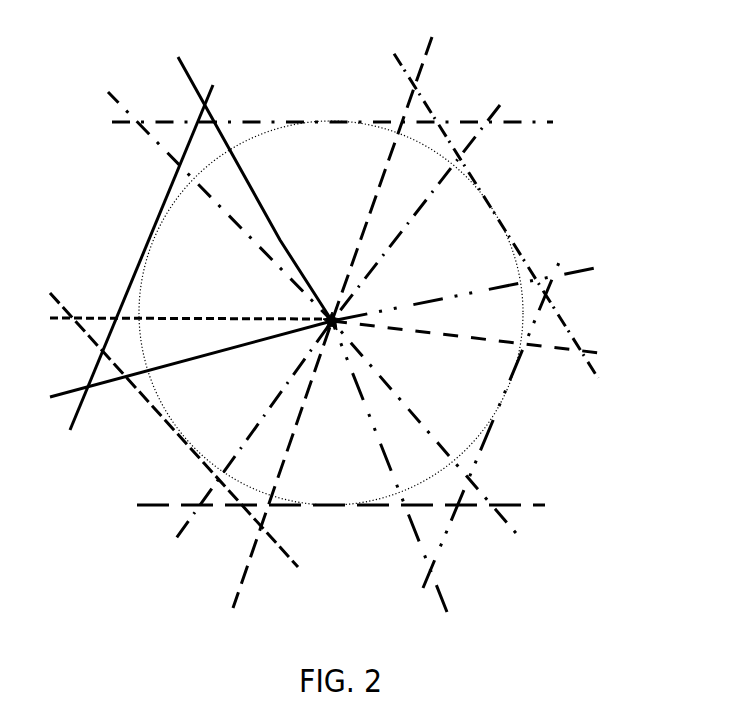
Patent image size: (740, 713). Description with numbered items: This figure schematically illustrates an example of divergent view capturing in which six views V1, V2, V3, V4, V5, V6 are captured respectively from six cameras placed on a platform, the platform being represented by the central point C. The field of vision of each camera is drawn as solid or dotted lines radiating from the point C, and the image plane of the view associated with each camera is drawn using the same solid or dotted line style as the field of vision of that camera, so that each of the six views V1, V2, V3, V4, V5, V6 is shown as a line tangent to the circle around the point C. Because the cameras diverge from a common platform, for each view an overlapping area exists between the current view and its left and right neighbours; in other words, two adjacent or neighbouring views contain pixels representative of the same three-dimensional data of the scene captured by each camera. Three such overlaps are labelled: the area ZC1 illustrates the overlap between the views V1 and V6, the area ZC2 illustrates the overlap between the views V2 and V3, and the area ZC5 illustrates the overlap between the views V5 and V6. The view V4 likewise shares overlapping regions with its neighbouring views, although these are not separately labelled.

The point C is at (335, 317).
The view V1 is at (500, 222).
The view V2 is at (287, 123).
The view V3 is at (152, 230).
The view V4 is at (177, 432).
The view V5 is at (387, 507).
The view V6 is at (490, 427).
The overlap area ZC1 is at (603, 272).
The overlap area ZC2 is at (201, 100).
The overlap area ZC5 is at (497, 515).